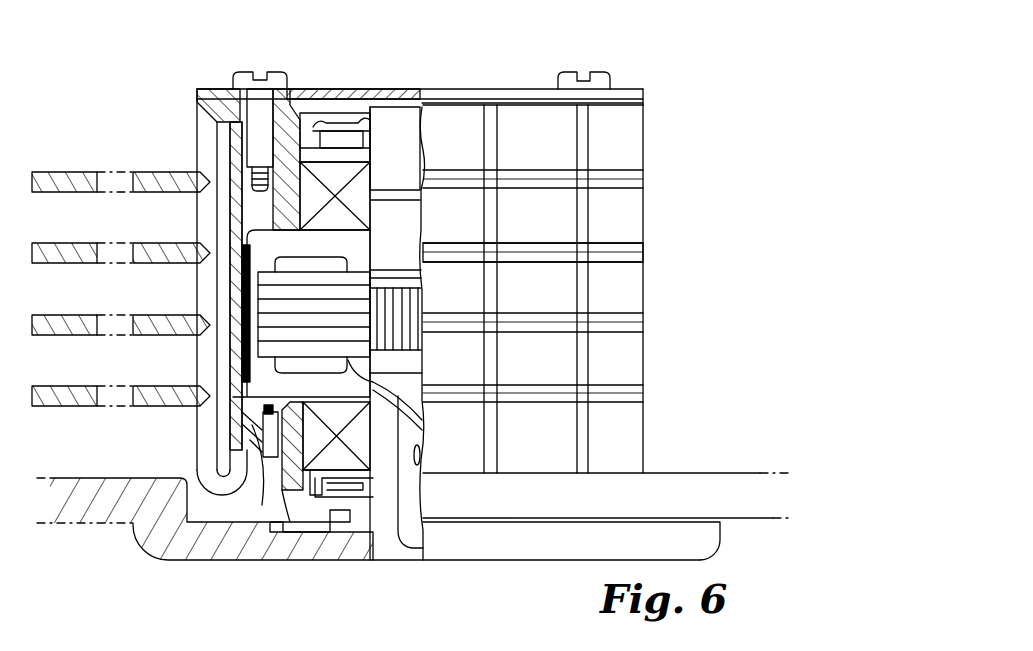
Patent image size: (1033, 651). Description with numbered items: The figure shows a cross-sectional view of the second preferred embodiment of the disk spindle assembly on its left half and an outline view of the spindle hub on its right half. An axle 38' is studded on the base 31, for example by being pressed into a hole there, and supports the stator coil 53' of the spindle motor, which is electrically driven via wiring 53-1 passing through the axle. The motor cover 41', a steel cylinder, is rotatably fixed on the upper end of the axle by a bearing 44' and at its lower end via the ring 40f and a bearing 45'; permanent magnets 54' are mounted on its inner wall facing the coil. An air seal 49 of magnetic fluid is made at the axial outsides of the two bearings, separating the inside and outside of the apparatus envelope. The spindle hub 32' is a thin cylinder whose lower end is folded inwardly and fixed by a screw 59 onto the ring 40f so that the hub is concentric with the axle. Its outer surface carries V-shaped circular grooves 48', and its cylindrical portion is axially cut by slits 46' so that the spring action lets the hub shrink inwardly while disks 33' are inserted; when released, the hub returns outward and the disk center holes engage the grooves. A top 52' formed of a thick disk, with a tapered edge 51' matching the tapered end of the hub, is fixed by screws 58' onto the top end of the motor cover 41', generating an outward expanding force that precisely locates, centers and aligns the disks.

The base 31 is at (93, 521).
The spindle hub 32' is at (193, 292).
The disks 33' is at (121, 289).
The axle 38' is at (420, 115).
The ring 40f is at (297, 468).
The motor cover 41' is at (195, 294).
The bearing 44' is at (360, 301).
The bearing 45' is at (357, 459).
The slits 46' is at (606, 289).
The circular grooves 48' is at (562, 266).
The air seal 49 is at (342, 122).
The tapered edge 51' is at (220, 158).
The top 52' is at (198, 85).
The stator coil 53' is at (389, 333).
The wiring 53-1 is at (419, 446).
The permanent magnets 54' is at (256, 313).
The screws 58' is at (261, 104).
The screw 59 is at (266, 480).